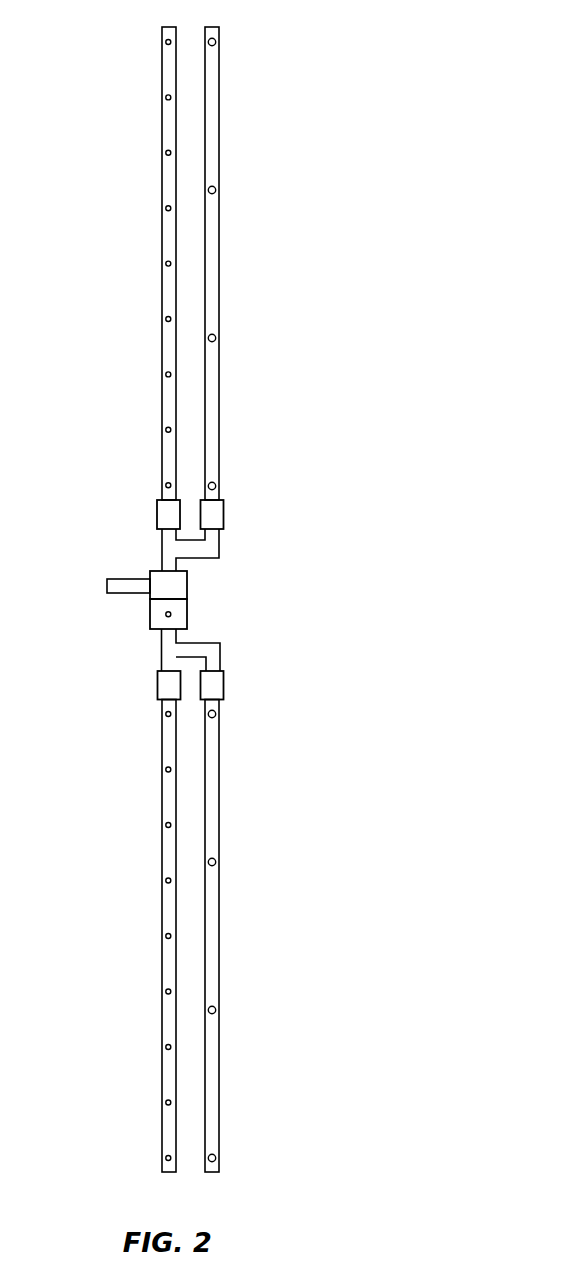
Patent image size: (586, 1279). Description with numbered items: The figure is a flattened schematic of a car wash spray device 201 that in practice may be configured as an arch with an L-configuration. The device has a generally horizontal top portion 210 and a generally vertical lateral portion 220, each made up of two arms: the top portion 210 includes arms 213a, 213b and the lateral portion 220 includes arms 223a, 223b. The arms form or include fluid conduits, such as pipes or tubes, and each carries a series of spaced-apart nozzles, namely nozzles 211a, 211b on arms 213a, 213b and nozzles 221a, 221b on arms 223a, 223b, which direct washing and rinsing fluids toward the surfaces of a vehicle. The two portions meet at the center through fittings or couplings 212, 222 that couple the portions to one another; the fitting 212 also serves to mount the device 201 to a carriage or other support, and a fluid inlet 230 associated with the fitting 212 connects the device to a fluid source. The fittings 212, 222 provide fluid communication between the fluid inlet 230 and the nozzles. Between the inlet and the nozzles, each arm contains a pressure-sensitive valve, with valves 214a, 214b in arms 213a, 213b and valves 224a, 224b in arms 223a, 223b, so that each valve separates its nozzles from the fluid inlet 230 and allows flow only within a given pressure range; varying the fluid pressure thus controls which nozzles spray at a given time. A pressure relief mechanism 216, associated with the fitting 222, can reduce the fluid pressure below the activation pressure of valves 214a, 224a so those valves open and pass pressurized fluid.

The car wash spray device 201 is at (108, 46).
The top portion 210 is at (254, 261).
The nozzles 211a is at (166, 208).
The nozzles 211b is at (216, 190).
The arm 213a is at (162, 395).
The arm 213b is at (219, 395).
The pressure-sensitive valve 214a is at (157, 513).
The pressure-sensitive valve 214b is at (224, 512).
The fitting 212 is at (187, 585).
The fitting 222 is at (187, 613).
The pressure relief mechanism 216 is at (166, 616).
The fluid inlet 230 is at (102, 586).
The lateral portion 220 is at (252, 894).
The pressure-sensitive valve 224a is at (157, 685).
The pressure-sensitive valve 224b is at (224, 685).
The arm 223a is at (162, 790).
The arm 223b is at (219, 790).
The nozzles 221a is at (166, 992).
The nozzles 221b is at (216, 1010).